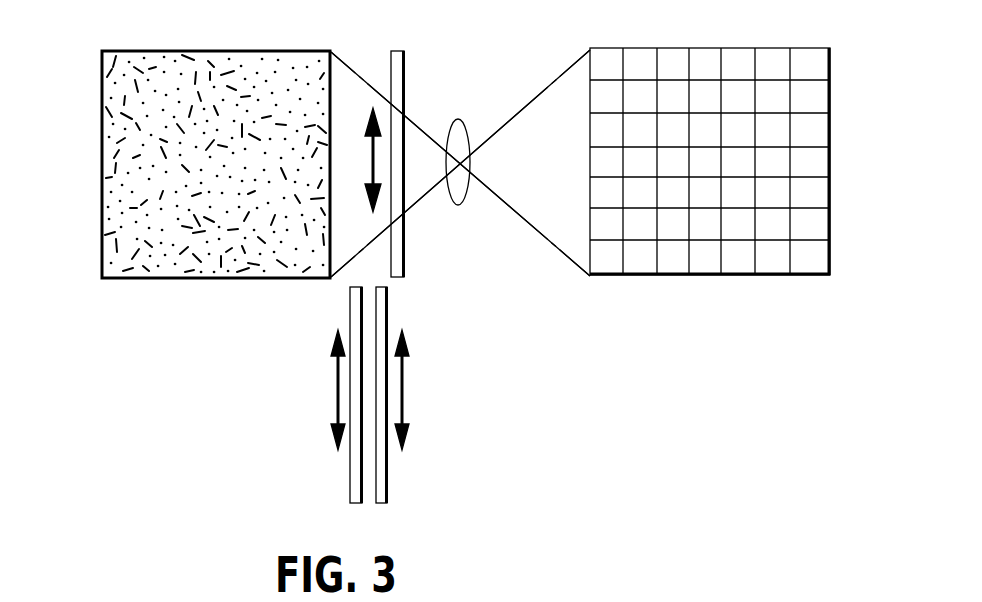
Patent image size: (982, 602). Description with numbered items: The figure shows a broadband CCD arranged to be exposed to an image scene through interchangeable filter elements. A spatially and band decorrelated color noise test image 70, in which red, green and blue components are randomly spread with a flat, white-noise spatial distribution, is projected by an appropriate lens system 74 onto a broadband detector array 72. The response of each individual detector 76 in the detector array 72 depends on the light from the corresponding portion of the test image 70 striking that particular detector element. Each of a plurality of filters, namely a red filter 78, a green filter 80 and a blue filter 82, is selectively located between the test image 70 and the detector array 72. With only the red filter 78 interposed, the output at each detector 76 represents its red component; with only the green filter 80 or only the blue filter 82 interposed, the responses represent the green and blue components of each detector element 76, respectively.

The test image 70 is at (103, 180).
The broadband detector array 72 is at (670, 277).
The lens system 74 is at (462, 205).
The detector 76 is at (810, 258).
The red filter 78 is at (406, 68).
The green filter 80 is at (388, 484).
The blue filter 82 is at (350, 484).